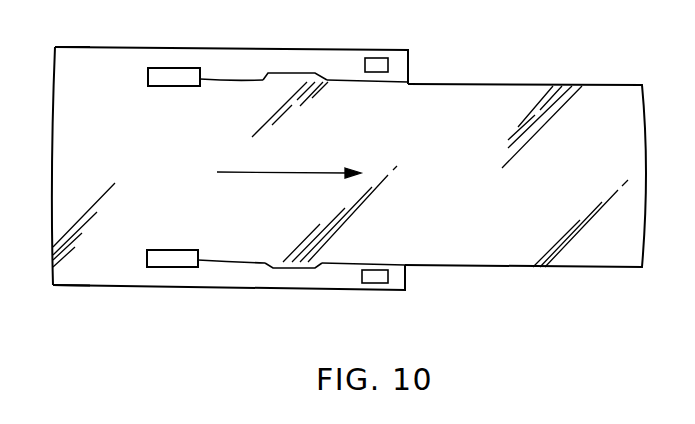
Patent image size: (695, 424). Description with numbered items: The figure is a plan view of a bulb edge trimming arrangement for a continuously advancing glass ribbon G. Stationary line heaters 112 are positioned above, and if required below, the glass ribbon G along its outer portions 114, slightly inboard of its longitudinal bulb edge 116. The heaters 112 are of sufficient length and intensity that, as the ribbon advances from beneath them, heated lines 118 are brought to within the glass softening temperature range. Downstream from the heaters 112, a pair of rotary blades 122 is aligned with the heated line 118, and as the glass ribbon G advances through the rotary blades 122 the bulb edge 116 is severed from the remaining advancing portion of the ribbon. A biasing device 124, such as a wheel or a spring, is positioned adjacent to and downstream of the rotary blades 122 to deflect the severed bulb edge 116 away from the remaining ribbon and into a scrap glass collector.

The glass ribbon G is at (508, 85).
The stationary line heater 112 is at (190, 68).
The outer portion 114 is at (270, 55).
The bulb edge 116 is at (88, 47).
The heated line 118 is at (250, 79).
The rotary blade 122 is at (317, 73).
The biasing device 124 is at (388, 62).